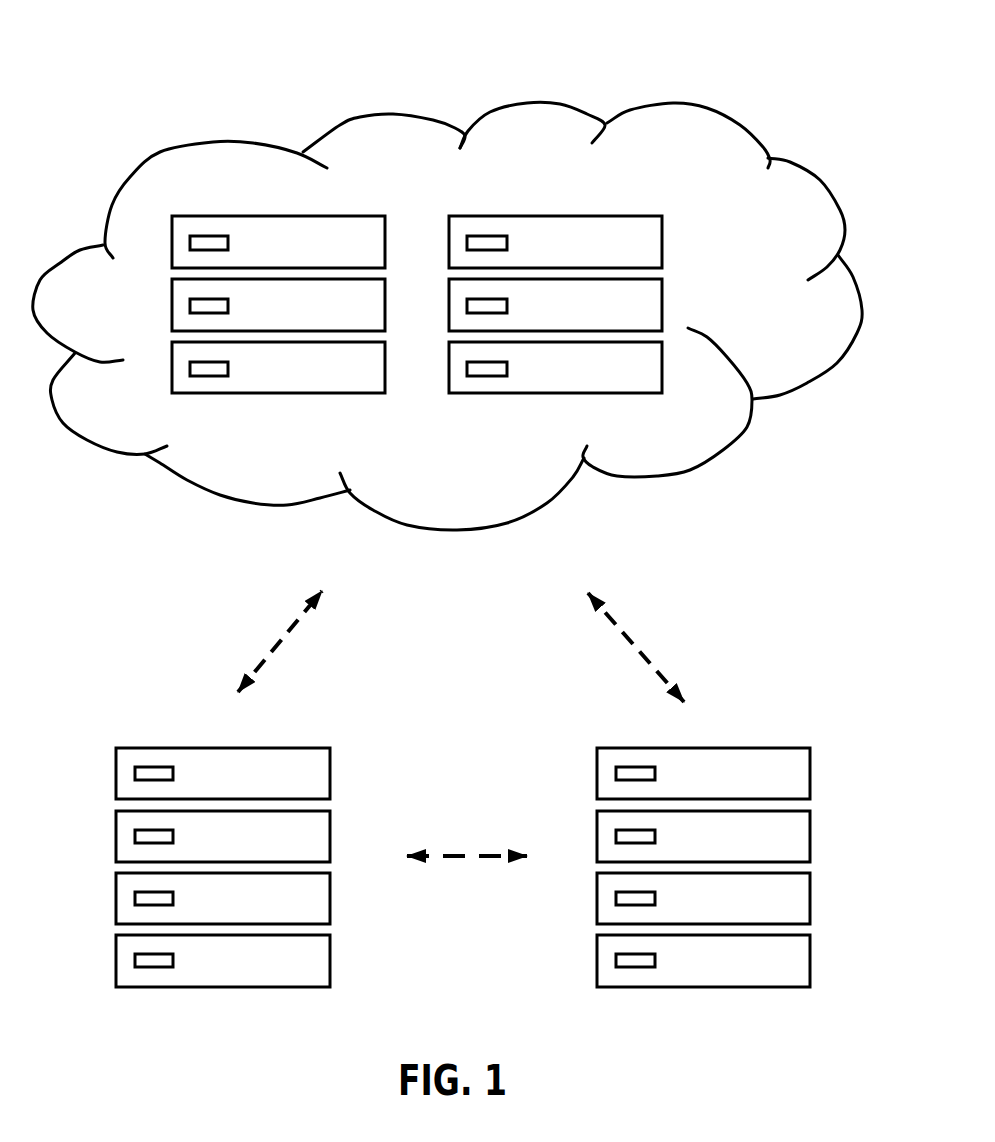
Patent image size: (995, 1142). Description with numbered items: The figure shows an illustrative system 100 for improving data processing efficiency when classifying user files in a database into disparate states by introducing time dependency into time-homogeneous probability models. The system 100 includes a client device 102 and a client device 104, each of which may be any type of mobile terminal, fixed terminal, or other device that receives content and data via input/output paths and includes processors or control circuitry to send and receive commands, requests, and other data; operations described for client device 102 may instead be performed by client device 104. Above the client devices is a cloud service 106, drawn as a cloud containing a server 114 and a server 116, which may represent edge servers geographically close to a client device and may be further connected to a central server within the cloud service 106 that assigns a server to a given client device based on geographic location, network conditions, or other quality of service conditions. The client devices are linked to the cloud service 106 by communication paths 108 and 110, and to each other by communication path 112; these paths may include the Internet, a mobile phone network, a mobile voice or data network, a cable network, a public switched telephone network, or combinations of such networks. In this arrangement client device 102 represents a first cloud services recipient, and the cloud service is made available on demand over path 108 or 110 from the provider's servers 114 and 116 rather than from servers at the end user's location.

The system 100 is at (480, 22).
The client device 102 is at (168, 738).
The client device 104 is at (753, 740).
The cloud service 106 is at (565, 98).
The communication path 108 is at (250, 613).
The communication path 110 is at (648, 598).
The communication path 112 is at (448, 837).
The server 114 is at (332, 212).
The server 116 is at (597, 213).